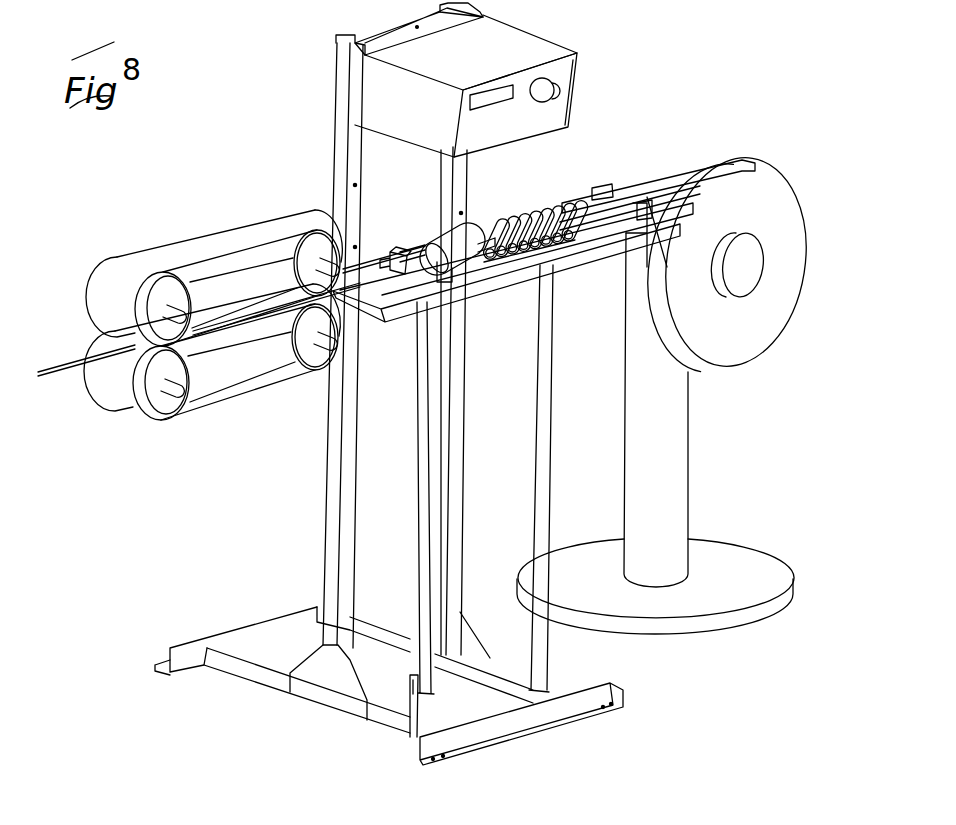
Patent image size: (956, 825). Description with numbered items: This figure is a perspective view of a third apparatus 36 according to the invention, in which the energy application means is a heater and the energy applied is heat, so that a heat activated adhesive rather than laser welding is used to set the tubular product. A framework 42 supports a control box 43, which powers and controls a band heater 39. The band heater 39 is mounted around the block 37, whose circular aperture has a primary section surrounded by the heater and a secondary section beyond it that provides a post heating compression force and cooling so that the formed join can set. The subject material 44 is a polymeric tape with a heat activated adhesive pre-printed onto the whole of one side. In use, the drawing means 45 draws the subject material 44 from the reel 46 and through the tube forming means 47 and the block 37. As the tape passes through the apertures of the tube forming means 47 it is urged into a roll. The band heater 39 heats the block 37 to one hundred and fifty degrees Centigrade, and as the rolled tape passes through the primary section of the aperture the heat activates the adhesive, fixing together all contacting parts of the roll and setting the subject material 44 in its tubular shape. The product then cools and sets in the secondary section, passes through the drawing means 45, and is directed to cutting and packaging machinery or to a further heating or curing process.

The apparatus 36 is at (231, 272).
The block 37 is at (424, 250).
The band heater 39 is at (447, 227).
The framework 42 is at (347, 127).
The control box 43 is at (346, 95).
The subject material 44 is at (655, 182).
The drawing means 45 is at (146, 230).
The reel 46 is at (790, 312).
The tube forming means 47 is at (556, 168).